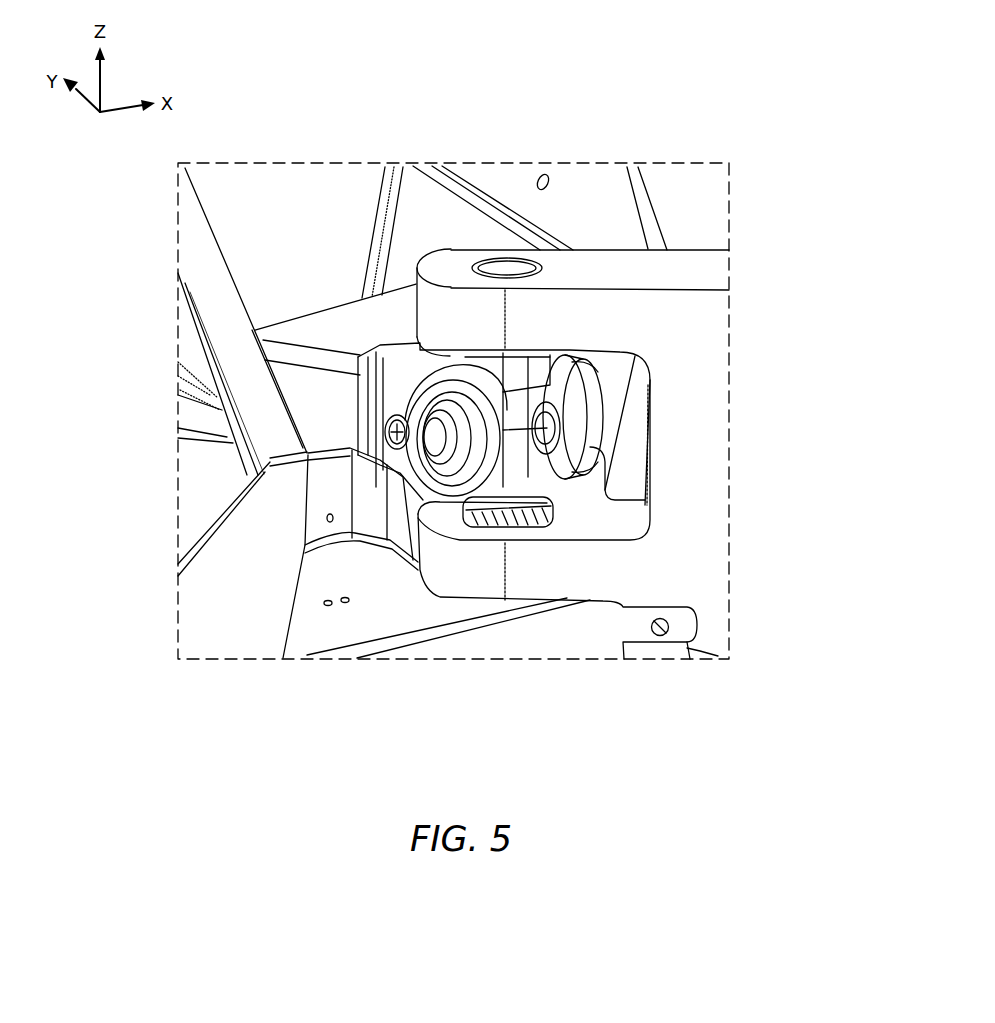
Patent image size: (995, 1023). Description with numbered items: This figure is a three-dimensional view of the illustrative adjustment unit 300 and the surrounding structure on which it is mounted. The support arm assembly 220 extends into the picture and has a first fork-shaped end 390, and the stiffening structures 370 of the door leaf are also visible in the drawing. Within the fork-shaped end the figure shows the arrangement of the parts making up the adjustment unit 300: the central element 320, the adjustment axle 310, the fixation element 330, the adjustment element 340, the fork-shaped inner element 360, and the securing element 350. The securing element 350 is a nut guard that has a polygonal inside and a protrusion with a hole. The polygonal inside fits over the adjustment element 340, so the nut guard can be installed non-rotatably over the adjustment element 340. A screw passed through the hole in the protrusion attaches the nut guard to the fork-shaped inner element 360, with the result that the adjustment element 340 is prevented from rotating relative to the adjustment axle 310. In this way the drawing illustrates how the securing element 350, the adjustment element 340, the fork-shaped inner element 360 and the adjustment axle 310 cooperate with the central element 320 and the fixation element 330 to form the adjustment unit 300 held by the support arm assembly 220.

The support arm assembly 220 is at (700, 570).
The adjustment unit 300 is at (628, 395).
The adjustment axle 310 is at (428, 440).
The central element 320 is at (526, 378).
The fixation element 330 is at (547, 428).
The adjustment element 340 is at (442, 415).
The securing element 350 is at (412, 448).
The fork-shaped inner element 360 is at (582, 378).
The stiffening structures 370 is at (500, 182).
The first fork-shaped end 390 is at (740, 420).